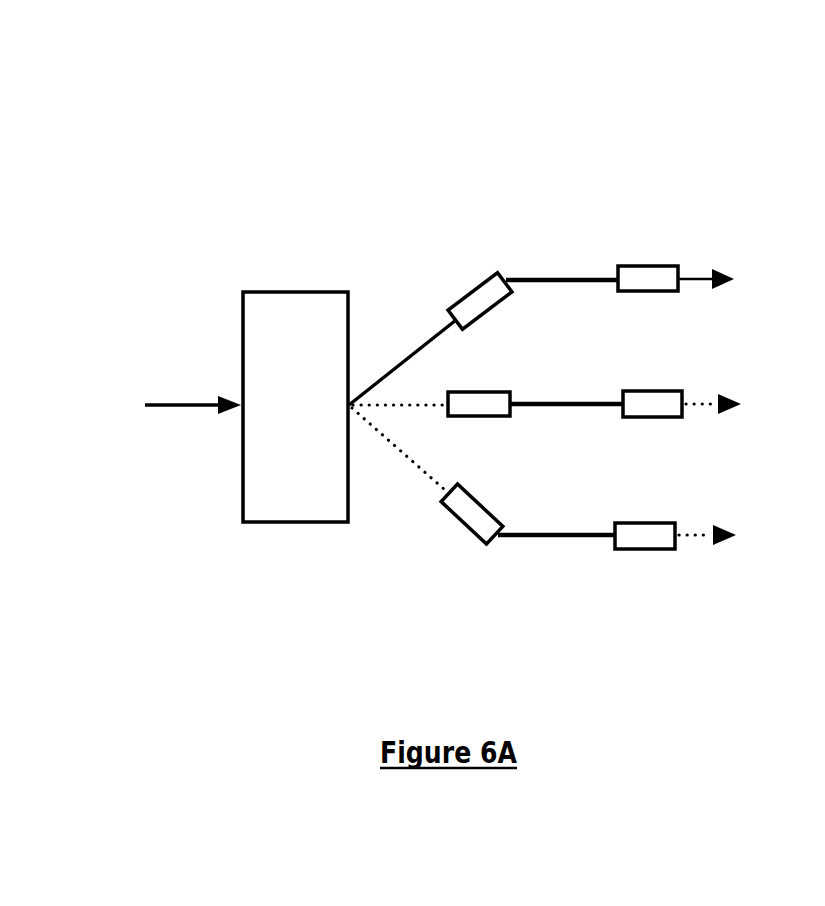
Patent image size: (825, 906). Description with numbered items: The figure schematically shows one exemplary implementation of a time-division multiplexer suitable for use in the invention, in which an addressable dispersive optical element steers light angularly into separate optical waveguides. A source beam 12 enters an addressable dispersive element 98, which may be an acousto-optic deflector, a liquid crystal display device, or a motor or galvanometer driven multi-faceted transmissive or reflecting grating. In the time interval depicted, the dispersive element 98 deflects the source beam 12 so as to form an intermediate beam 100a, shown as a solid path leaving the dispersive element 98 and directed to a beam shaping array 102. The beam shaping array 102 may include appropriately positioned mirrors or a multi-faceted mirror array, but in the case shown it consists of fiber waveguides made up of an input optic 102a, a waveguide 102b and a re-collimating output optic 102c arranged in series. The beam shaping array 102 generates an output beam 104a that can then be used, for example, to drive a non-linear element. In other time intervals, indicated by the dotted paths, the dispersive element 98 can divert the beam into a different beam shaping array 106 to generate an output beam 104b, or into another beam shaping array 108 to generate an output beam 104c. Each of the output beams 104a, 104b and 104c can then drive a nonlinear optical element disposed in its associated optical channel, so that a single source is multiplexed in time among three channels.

The source beam 12 is at (183, 403).
The addressable dispersive element 98 is at (287, 310).
The intermediate beam 100a is at (420, 340).
The beam shaping array 102 is at (546, 183).
The input optic 102a is at (485, 277).
The waveguide 102b is at (562, 278).
The re-collimating output optic 102c is at (650, 264).
The output beam 104a is at (702, 275).
The output beam 104b is at (708, 398).
The output beam 104c is at (698, 525).
The beam shaping array 106 is at (517, 368).
The beam shaping array 108 is at (513, 478).